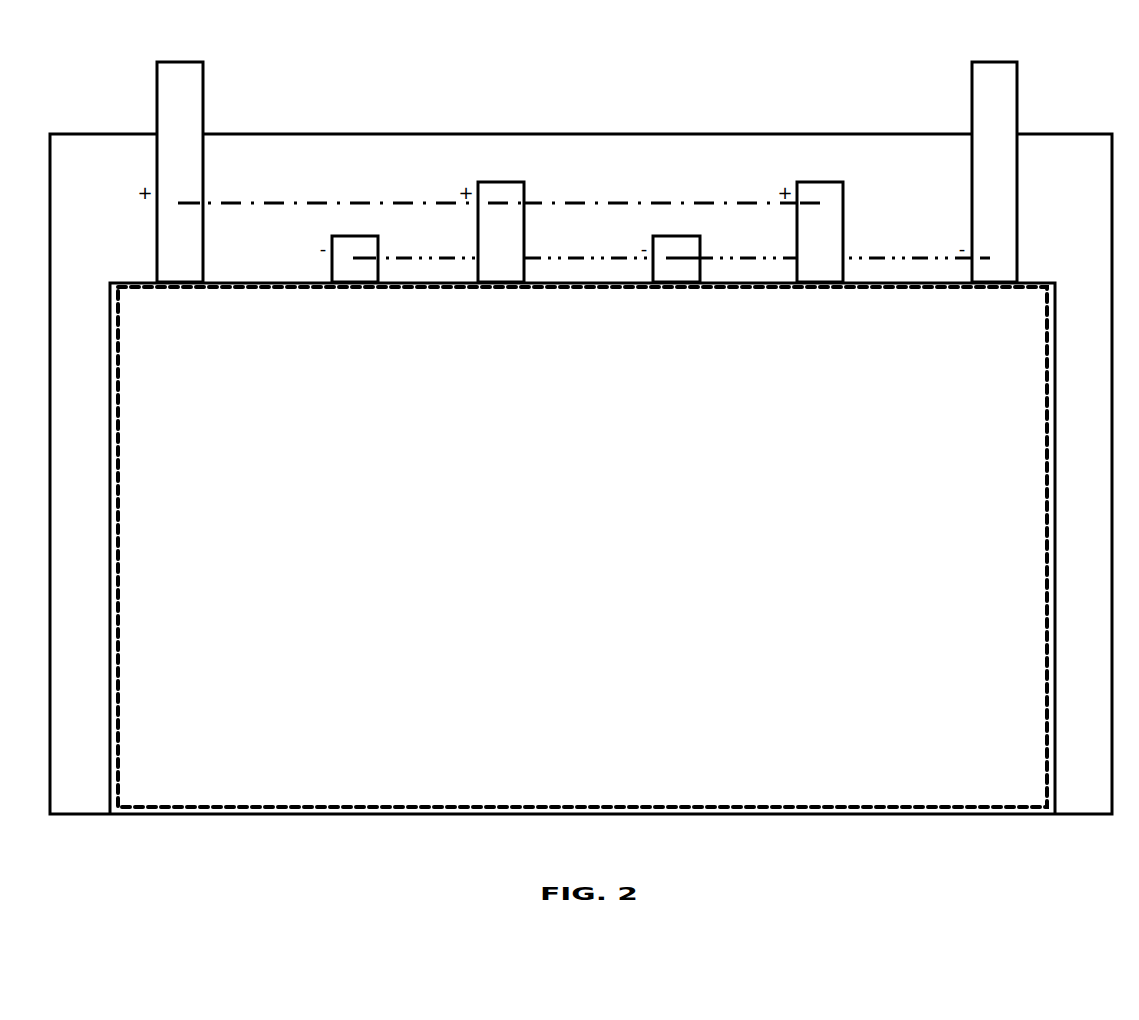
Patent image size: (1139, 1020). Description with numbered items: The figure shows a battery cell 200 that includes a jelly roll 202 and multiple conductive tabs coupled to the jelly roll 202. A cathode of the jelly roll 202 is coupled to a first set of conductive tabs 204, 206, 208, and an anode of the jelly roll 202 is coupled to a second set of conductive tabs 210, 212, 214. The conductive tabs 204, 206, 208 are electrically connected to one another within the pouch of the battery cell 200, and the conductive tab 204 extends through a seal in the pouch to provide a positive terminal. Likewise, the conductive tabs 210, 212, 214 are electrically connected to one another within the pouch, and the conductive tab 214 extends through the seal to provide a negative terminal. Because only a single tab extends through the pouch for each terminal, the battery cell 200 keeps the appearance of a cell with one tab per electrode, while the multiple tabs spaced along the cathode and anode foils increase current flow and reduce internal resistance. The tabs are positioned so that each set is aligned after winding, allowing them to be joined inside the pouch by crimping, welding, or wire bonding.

The battery cell 200 is at (332, 134).
The jelly roll 202 is at (582, 548).
The conductive tab 204 is at (157, 123).
The conductive tab 206 is at (524, 195).
The conductive tab 208 is at (843, 235).
The conductive tab 210 is at (332, 270).
The conductive tab 212 is at (700, 250).
The conductive tab 214 is at (1017, 126).